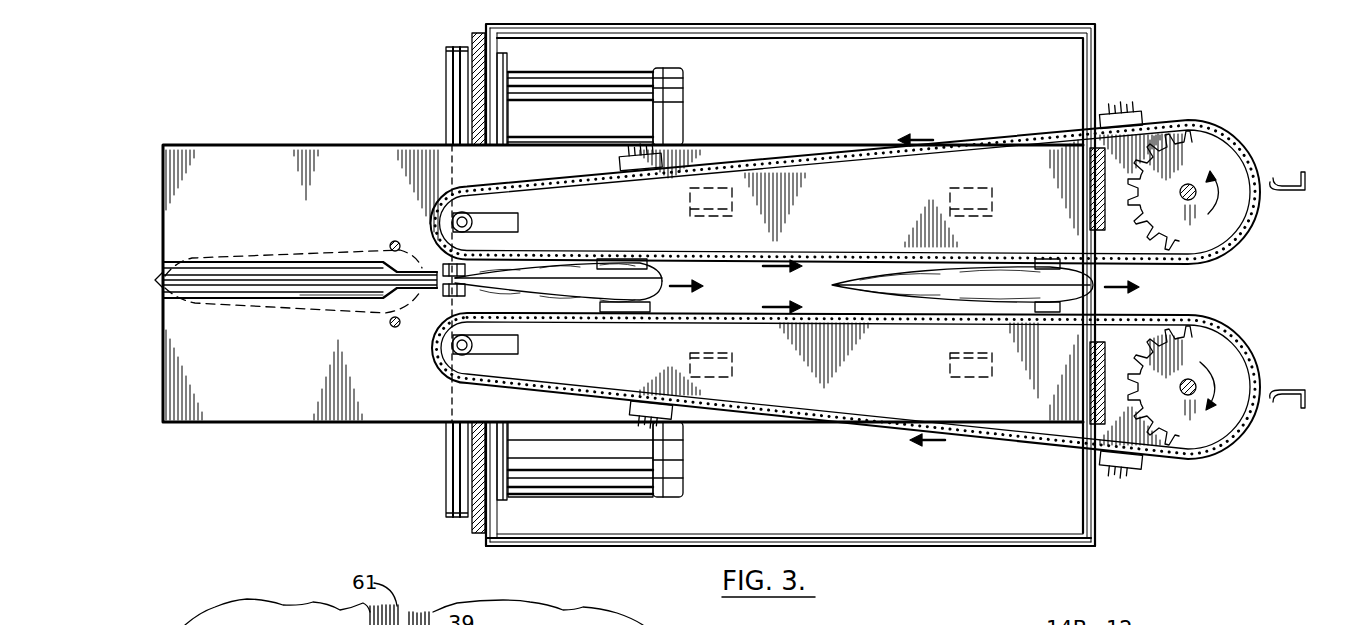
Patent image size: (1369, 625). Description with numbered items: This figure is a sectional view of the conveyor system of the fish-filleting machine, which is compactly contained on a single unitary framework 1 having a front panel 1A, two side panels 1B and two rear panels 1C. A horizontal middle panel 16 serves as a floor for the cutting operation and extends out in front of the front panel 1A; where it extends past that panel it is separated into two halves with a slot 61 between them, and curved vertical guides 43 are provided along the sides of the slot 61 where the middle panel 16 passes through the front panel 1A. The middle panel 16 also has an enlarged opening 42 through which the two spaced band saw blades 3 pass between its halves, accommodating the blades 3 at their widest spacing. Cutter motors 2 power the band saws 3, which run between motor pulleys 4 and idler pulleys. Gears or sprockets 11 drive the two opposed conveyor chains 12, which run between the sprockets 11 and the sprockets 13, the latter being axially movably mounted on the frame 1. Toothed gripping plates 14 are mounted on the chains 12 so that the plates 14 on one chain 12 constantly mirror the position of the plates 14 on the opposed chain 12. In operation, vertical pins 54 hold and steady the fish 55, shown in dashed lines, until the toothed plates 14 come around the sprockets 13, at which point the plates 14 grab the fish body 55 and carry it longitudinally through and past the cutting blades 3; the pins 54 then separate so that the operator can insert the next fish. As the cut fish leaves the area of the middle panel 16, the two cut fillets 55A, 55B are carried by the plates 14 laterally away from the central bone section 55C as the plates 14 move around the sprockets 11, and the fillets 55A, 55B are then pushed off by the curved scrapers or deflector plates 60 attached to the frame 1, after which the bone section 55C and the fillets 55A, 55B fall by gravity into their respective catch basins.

The framework 1 is at (1105, 43).
The front panel 1A is at (470, 45).
The side panel 1B is at (830, 540).
The rear panel 1C is at (1100, 165).
The cutter motor 2 is at (605, 102).
The band saw blade 3 is at (458, 75).
The motor pulley 4 is at (445, 108).
The sprocket gear 11 is at (1197, 160).
The conveyor chain 12 is at (838, 158).
The sprocket gear 13 is at (470, 196).
The toothed gripping plate 14 is at (626, 154).
The middle panel 16 is at (278, 392).
The enlarged opening 42 is at (440, 296).
The curved vertical guide 43 is at (333, 298).
The vertical pin 54 is at (390, 243).
The fish 55 is at (257, 310).
The cut fillet 55A is at (558, 300).
The cut fillet 55B is at (583, 268).
The central bone section 55C is at (640, 278).
The scraper 60 is at (1310, 186).
The slot 61 is at (278, 283).